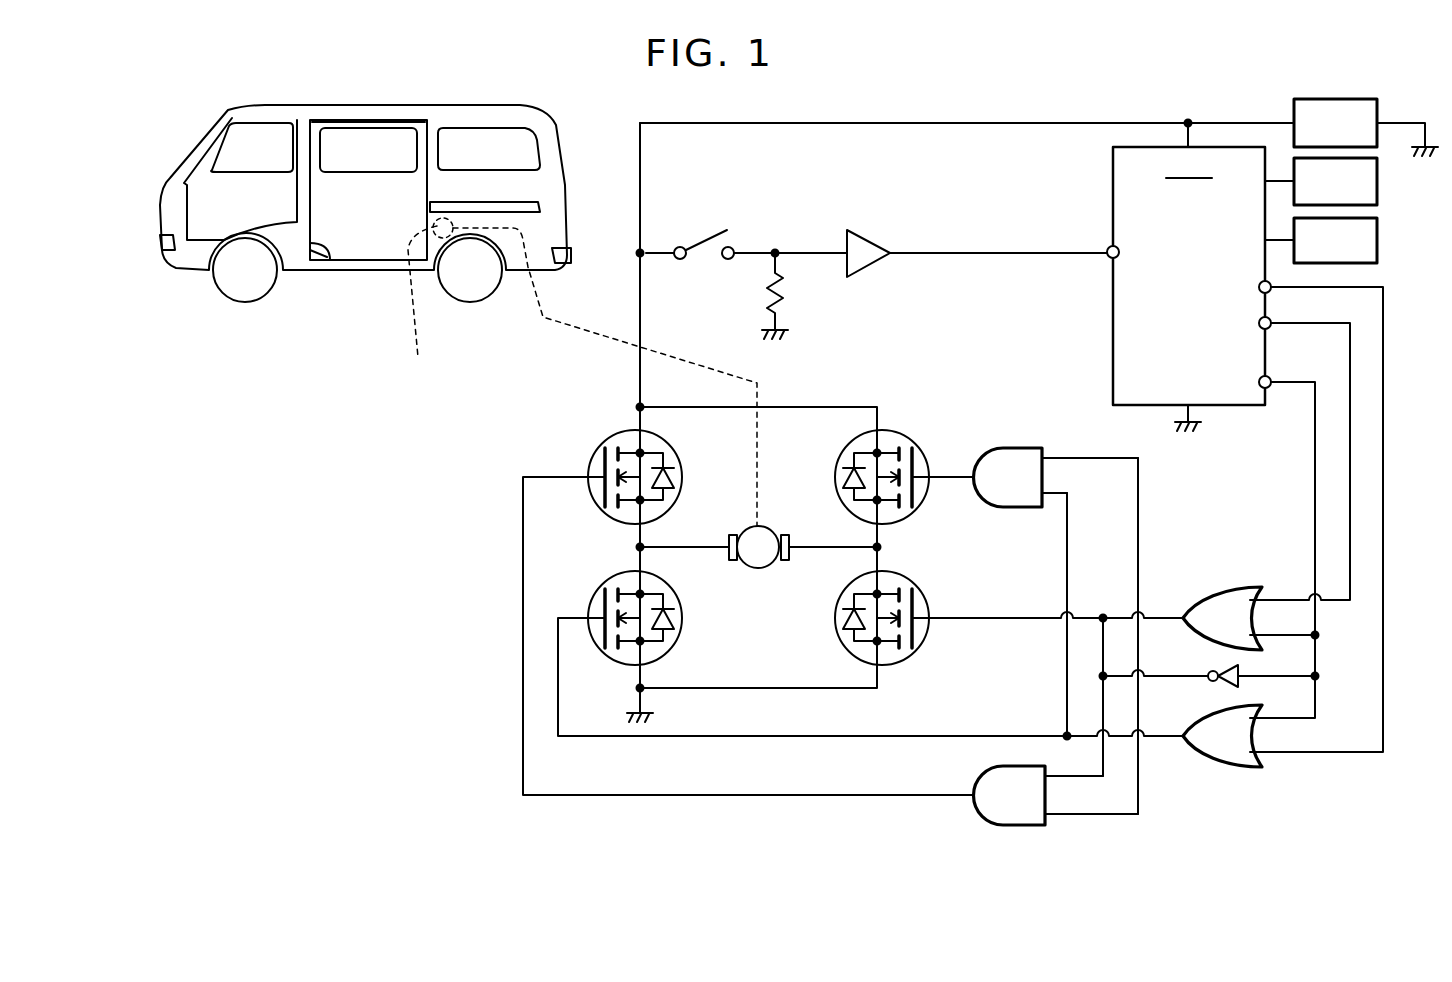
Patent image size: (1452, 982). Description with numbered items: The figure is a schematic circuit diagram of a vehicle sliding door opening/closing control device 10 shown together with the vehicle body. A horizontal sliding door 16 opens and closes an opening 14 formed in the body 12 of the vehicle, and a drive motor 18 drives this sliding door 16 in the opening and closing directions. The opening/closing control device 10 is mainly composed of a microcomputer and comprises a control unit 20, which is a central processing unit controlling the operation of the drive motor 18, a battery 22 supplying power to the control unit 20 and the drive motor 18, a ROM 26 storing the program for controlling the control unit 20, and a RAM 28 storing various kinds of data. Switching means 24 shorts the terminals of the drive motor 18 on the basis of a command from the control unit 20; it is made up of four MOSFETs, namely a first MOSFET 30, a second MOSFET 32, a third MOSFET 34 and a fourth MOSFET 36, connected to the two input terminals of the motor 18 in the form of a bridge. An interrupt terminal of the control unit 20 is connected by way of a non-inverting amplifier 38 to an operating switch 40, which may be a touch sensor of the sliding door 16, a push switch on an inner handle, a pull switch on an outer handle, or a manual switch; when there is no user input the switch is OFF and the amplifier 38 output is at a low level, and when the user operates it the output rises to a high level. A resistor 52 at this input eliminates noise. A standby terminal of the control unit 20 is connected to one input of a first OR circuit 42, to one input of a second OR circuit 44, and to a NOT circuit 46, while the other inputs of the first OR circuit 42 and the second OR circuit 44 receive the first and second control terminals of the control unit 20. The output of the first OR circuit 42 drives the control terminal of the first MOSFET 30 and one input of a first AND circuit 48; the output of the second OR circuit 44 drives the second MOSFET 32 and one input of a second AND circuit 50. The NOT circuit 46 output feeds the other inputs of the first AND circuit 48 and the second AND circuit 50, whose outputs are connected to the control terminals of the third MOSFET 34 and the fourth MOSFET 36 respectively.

The opening/closing control device 10 is at (949, 84).
The body 12 is at (440, 112).
The opening 14 is at (327, 257).
The horizontal sliding door 16 is at (368, 222).
The drive motor 18 is at (802, 470).
The control unit 20 is at (1113, 182).
The battery 22 is at (1355, 99).
The switching means 24 is at (583, 434).
The ROM 26 is at (1377, 240).
The RAM 28 is at (1377, 181).
The first MOSFET 30 is at (677, 636).
The second MOSFET 32 is at (928, 638).
The third MOSFET 34 is at (922, 507).
The fourth MOSFET 36 is at (677, 458).
The non-inverting amplifier 38 is at (867, 236).
The operating switch 40 is at (703, 236).
The first OR circuit 42 is at (1232, 768).
The second OR circuit 44 is at (1232, 587).
The NOT circuit 46 is at (1225, 688).
The first AND circuit 48 is at (1002, 446).
The second AND circuit 50 is at (1010, 836).
The resistor 52 is at (763, 293).